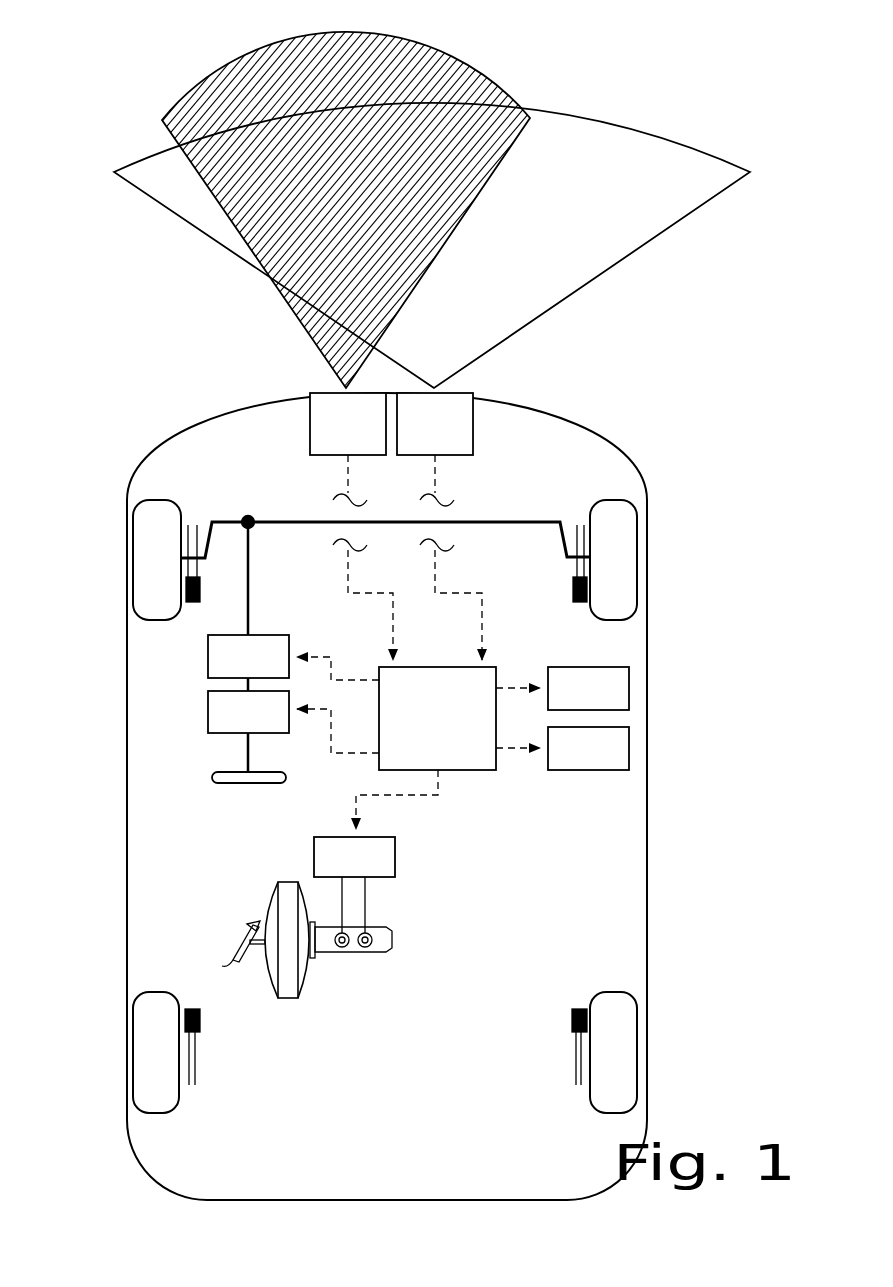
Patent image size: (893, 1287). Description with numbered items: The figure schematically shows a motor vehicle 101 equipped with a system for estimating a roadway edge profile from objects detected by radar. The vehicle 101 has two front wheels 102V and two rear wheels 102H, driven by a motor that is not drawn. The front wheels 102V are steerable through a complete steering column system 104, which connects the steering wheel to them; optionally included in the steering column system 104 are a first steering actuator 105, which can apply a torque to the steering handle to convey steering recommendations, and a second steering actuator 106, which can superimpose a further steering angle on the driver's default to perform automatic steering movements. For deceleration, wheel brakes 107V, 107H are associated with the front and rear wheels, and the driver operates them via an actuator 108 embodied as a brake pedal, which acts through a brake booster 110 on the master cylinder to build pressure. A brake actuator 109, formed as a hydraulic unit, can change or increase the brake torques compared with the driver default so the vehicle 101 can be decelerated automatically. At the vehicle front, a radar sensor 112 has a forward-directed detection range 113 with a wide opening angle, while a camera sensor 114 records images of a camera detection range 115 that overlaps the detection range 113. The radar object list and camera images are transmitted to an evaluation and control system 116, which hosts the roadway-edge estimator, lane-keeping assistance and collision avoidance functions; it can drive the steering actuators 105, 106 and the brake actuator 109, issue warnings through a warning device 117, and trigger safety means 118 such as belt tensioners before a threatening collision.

The motor vehicle 101 is at (647, 828).
The front wheels 102V is at (133, 552).
The rear wheels 102H is at (133, 1030).
The steering column system 104 is at (285, 523).
The first steering actuator 105 is at (248, 657).
The second steering actuator 106 is at (248, 713).
The front wheel brakes 107V is at (192, 524).
The rear wheel brakes 107H is at (198, 1033).
The actuator 108 is at (247, 930).
The brake actuator 109 is at (253, 786).
The brake booster 110 is at (272, 908).
The radar sensor 112 is at (351, 526).
The detection range 113 is at (290, 308).
The camera sensor 114 is at (439, 526).
The camera detection range 115 is at (548, 310).
The evaluation and control system 116 is at (418, 743).
The warning device 117 is at (588, 688).
The safety means 118 is at (588, 748).